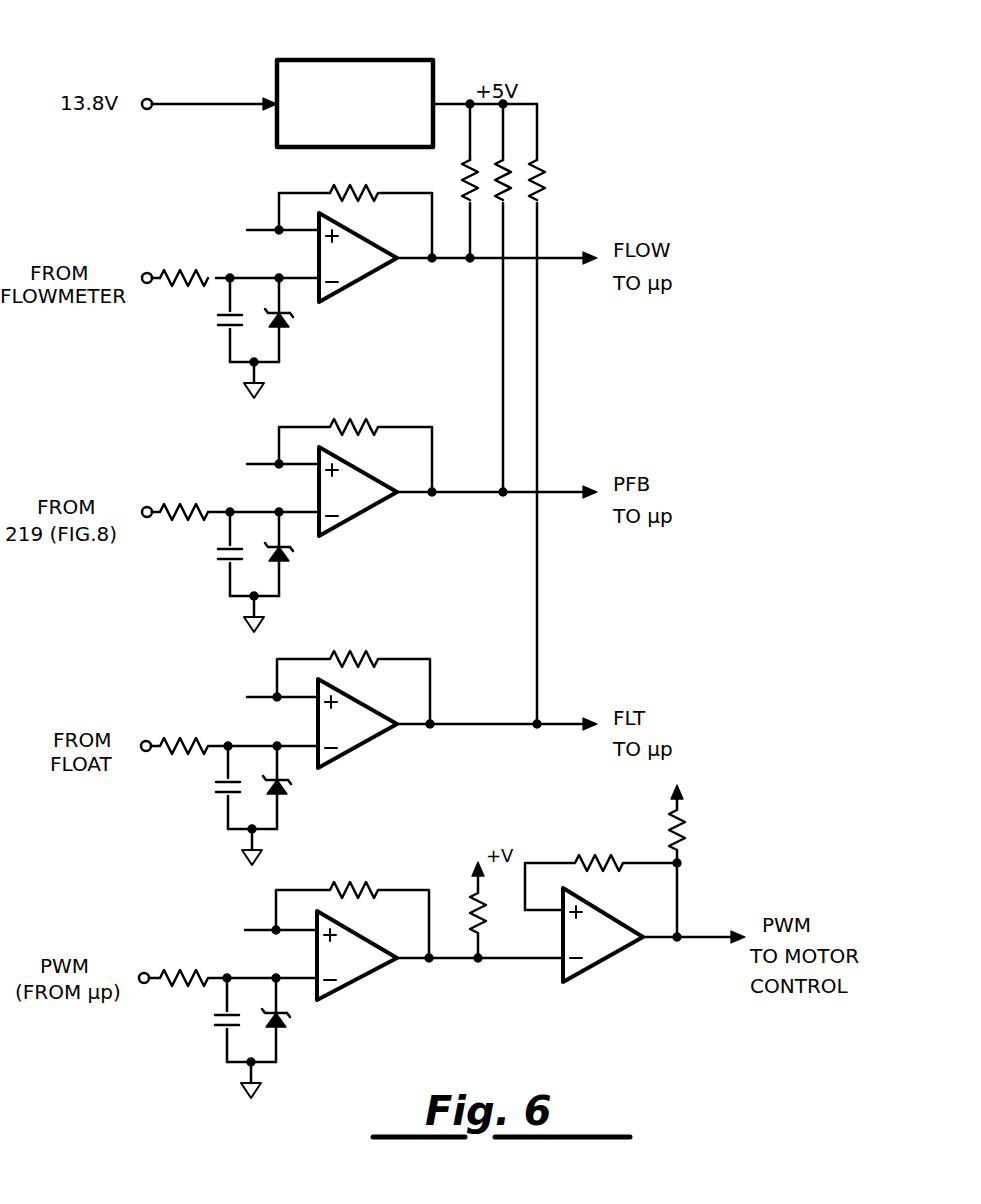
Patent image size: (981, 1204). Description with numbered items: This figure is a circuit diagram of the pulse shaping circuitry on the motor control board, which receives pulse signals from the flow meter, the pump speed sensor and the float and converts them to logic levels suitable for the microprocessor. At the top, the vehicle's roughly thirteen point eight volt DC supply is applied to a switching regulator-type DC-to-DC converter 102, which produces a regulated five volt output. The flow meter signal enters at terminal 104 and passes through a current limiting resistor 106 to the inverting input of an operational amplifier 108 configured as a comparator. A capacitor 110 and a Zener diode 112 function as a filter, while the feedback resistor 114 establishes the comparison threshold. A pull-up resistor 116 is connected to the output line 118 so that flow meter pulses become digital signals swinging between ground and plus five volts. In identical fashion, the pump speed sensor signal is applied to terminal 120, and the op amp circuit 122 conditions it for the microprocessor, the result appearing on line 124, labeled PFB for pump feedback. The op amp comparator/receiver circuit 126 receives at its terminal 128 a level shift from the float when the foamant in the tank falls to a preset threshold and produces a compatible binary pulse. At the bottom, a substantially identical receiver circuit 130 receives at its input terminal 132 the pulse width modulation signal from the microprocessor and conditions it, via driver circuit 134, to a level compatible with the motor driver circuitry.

The switching regulator-type DC-to-DC converter 102 is at (360, 60).
The terminal 104 is at (147, 272).
The current limiting resistor 106 is at (181, 285).
The operational amplifier 108 is at (366, 288).
The capacitor 110 is at (222, 318).
The Zener diode 112 is at (290, 320).
The feedback resistor 114 is at (352, 187).
The pull-up resistor 116 is at (464, 180).
The output line 118 is at (485, 262).
The terminal 120 is at (147, 506).
The op amp circuit 122 is at (366, 522).
The line 124 is at (485, 496).
The op amp comparator/receiver circuit 126 is at (366, 766).
The terminal 128 is at (146, 740).
The receiver circuit 130 is at (363, 998).
The input terminal 132 is at (144, 972).
The driver circuit 134 is at (608, 962).